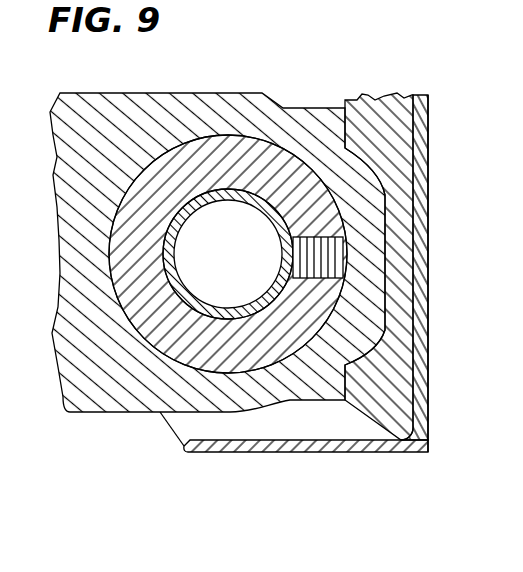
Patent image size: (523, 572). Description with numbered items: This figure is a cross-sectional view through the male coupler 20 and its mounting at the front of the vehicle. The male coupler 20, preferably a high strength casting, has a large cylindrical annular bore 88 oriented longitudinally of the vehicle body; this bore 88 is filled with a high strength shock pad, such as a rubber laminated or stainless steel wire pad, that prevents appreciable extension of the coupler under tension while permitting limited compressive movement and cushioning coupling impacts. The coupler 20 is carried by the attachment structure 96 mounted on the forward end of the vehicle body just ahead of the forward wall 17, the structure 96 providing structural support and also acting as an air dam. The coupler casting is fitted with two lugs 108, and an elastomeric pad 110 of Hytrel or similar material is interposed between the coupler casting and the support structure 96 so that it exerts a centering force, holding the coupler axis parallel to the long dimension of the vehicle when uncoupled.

The male coupler 20 is at (180, 93).
The lugs 108 is at (311, 113).
The annular bore 88 is at (340, 250).
The attachment structure 96 is at (424, 302).
The elastomeric pad 110 is at (426, 404).
The forward wall 17 is at (428, 124).